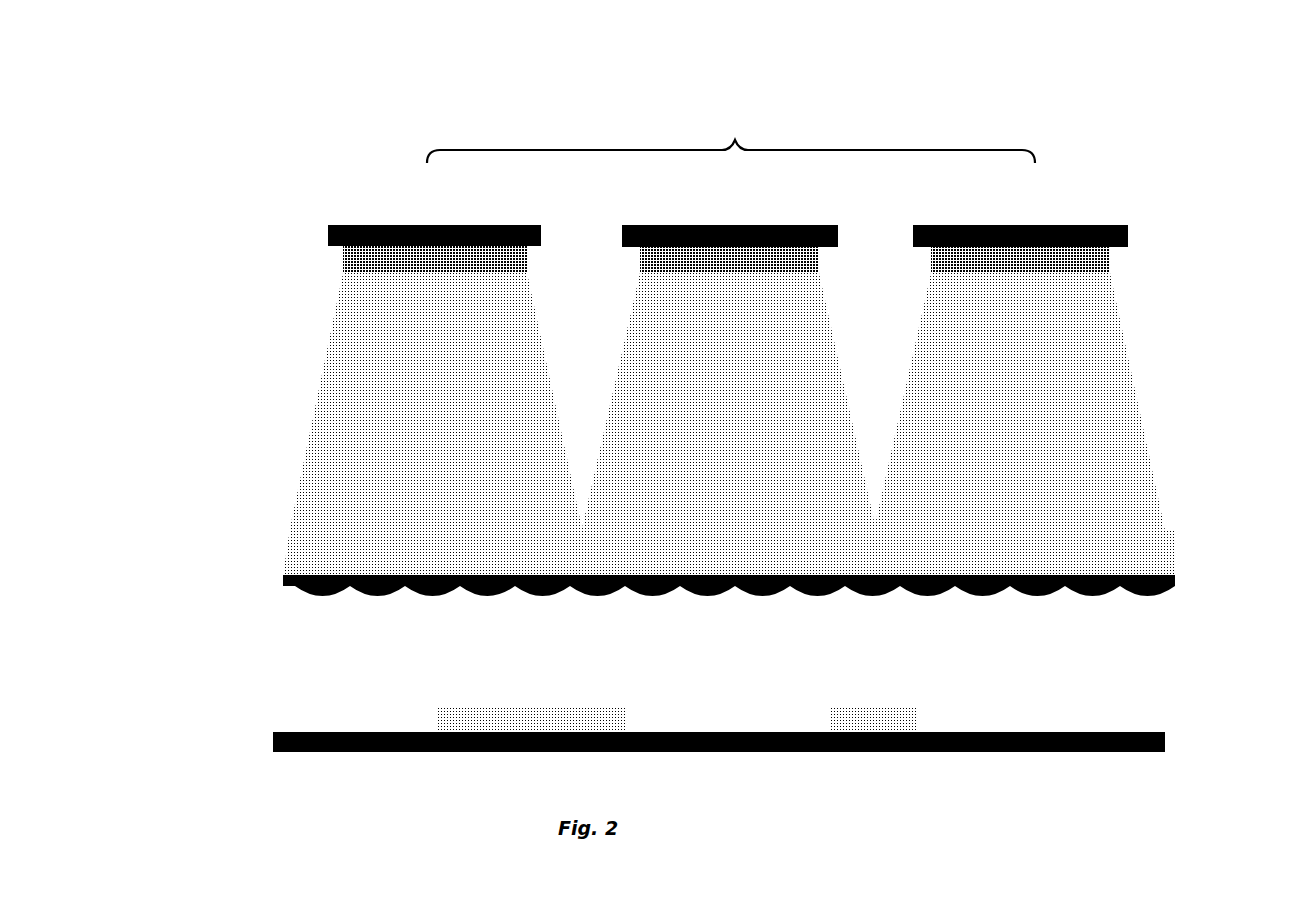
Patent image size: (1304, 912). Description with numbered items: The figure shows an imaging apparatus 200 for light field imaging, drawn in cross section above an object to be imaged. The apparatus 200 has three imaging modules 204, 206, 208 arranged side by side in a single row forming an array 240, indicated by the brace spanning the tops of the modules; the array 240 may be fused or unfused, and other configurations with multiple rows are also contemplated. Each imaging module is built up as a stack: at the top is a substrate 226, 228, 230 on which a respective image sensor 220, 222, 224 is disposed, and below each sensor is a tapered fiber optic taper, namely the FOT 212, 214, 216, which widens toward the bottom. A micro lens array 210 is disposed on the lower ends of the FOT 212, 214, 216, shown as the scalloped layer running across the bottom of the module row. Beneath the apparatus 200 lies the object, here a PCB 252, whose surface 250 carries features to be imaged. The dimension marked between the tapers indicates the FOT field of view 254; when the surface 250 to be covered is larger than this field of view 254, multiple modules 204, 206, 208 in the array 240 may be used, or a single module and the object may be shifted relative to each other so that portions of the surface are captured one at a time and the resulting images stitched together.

The imaging apparatus 200 is at (783, 98).
The array 240 is at (731, 137).
The imaging module 204 is at (375, 367).
The imaging module 206 is at (730, 378).
The imaging module 208 is at (1067, 397).
The micro lens array 210 is at (1172, 590).
The FOT 212 is at (338, 492).
The FOT 214 is at (688, 360).
The FOT 216 is at (1124, 459).
The image sensor 220 is at (343, 267).
The image sensor 222 is at (653, 263).
The image sensor 224 is at (1114, 264).
The substrate 226 is at (343, 232).
The substrate 228 is at (645, 236).
The substrate 230 is at (1110, 232).
The surface 250 is at (285, 733).
The PCB 252 is at (1166, 750).
The FOT field of view 254 is at (573, 595).